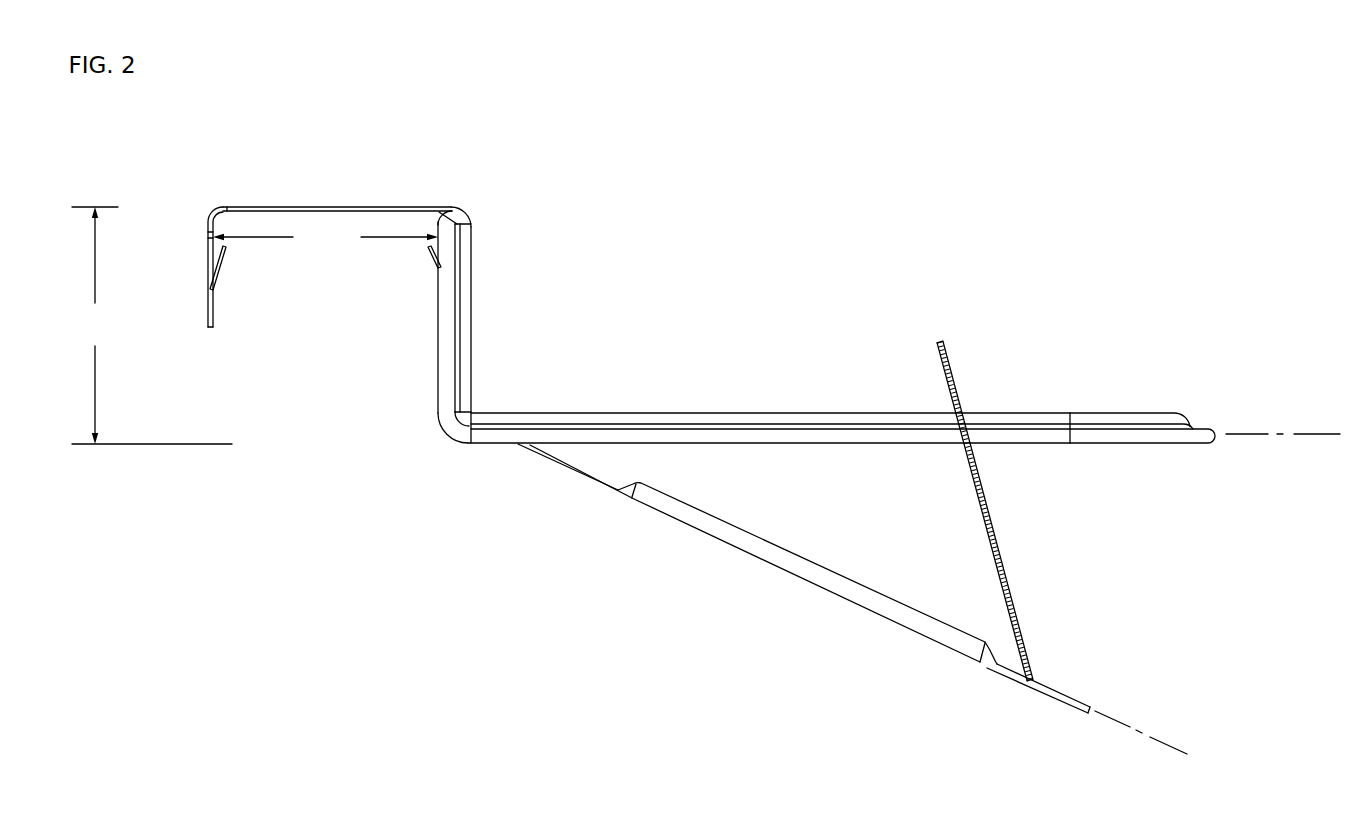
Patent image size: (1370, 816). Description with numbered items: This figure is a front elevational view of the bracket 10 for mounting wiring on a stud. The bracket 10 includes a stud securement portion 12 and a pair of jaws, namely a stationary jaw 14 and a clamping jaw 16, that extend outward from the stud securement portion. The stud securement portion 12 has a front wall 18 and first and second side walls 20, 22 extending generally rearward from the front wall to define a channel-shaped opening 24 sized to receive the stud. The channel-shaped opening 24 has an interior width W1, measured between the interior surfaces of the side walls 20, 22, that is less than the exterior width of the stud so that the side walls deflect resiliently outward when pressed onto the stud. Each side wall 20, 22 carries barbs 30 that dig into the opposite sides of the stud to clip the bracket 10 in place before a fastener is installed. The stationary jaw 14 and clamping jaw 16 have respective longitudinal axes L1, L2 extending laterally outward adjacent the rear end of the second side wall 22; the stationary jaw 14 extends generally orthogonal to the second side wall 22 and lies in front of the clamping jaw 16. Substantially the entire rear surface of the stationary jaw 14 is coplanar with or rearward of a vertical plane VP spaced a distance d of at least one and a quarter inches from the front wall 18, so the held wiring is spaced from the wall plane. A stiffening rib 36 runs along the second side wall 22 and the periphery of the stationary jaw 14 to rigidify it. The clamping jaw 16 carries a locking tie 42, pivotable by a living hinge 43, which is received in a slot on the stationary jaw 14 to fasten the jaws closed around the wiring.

The bracket 10 is at (708, 213).
The stud securement portion 12 is at (406, 198).
The stationary jaw 14 is at (1100, 404).
The clamping jaw 16 is at (988, 682).
The front wall 18 is at (337, 207).
The first side wall 20 is at (208, 262).
The second side wall 22 is at (438, 312).
The channel-shaped opening 24 is at (315, 273).
The barbs 30 is at (224, 252).
The stiffening rib 36 is at (710, 418).
The locking tie 42 is at (995, 540).
The living hinge 43 is at (1030, 680).
The distance d is at (95, 325).
The interior width W1 is at (325, 237).
The vertical plane VP is at (197, 445).
The longitudinal axis of the stationary jaw L1 is at (1262, 434).
The longitudinal axis of the clamping jaw L2 is at (1170, 742).